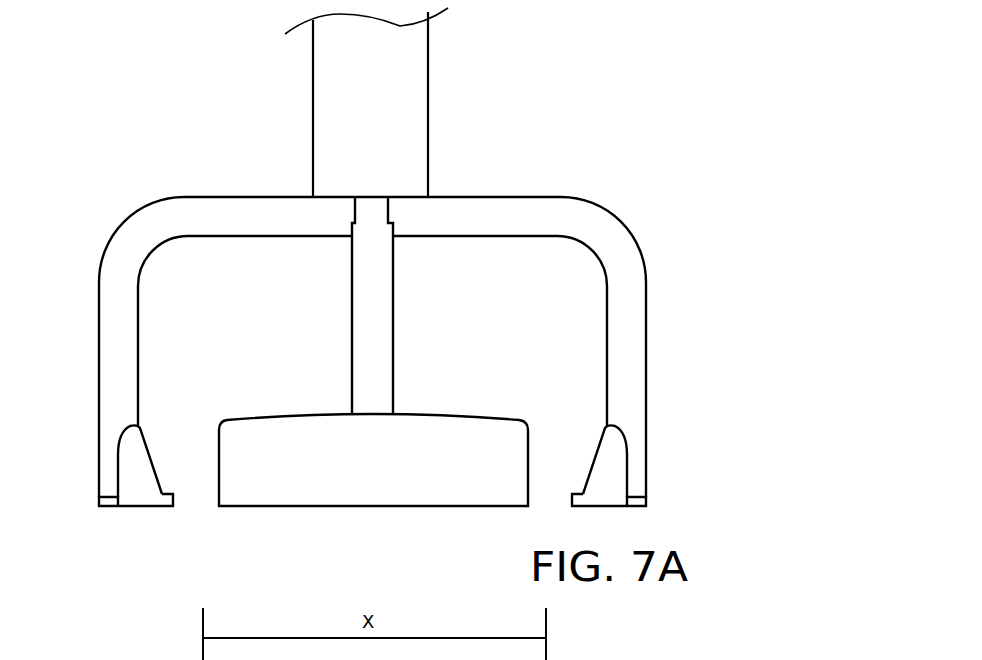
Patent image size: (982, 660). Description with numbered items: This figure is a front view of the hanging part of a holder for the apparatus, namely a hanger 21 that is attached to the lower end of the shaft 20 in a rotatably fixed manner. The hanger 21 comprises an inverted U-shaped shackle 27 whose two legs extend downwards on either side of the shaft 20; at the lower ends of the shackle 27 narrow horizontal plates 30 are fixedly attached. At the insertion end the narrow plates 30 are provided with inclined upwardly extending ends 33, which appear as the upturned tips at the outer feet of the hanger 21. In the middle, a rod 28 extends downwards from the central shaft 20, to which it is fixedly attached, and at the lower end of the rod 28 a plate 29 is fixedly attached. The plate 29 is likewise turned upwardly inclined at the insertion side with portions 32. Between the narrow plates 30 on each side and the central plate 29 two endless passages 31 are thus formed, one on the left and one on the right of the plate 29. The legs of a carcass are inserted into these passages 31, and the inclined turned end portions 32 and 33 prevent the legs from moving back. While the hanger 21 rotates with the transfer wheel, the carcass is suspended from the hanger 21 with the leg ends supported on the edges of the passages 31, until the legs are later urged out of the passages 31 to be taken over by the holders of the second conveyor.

The shaft 20 is at (418, 101).
The hanger 21 is at (575, 95).
The inverted U-shaped shackle 27 is at (633, 310).
The rod 28 is at (372, 340).
The plate 29 is at (455, 490).
The narrow horizontal plates 30 is at (155, 470).
The endless passages 31 is at (204, 465).
The upwardly inclined portions 32 is at (388, 480).
The inclined upwardly extending ends 33 is at (125, 452).